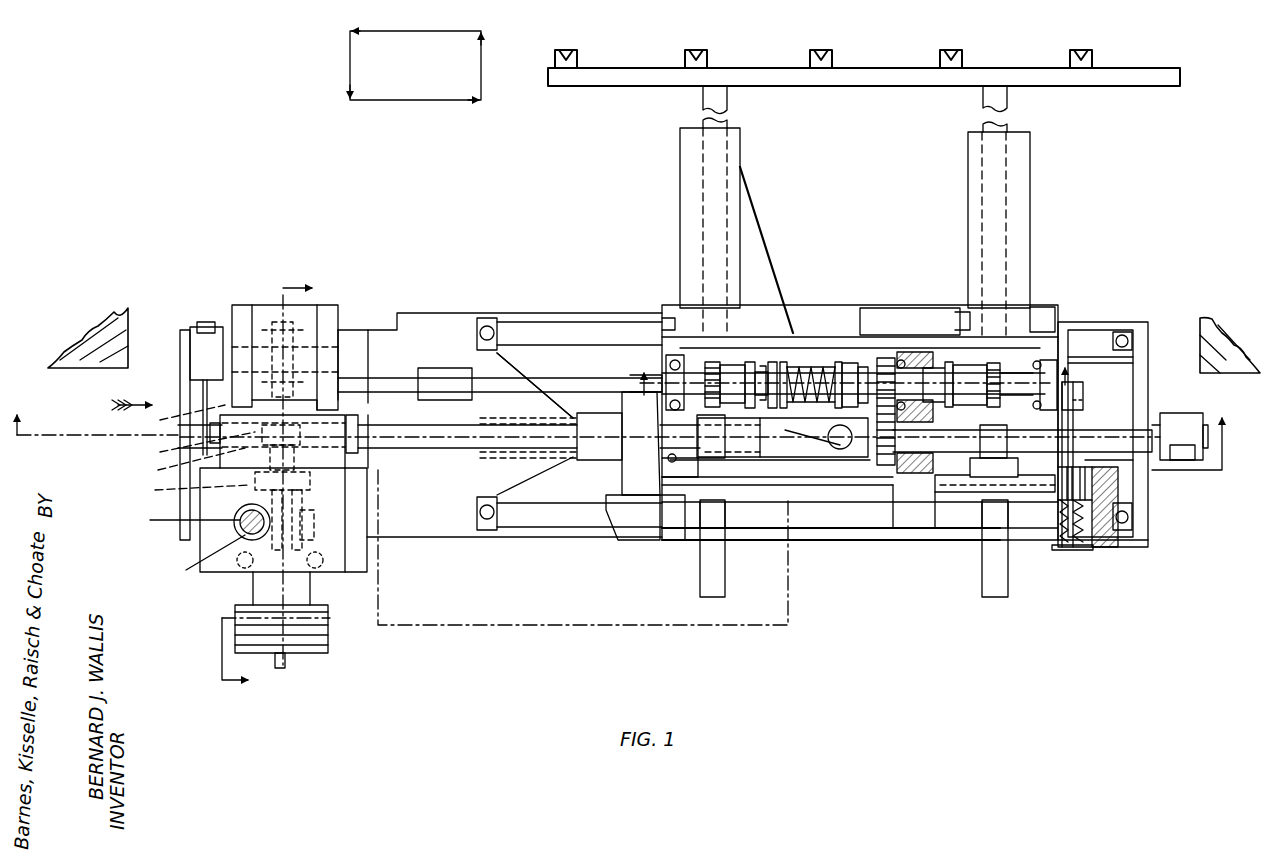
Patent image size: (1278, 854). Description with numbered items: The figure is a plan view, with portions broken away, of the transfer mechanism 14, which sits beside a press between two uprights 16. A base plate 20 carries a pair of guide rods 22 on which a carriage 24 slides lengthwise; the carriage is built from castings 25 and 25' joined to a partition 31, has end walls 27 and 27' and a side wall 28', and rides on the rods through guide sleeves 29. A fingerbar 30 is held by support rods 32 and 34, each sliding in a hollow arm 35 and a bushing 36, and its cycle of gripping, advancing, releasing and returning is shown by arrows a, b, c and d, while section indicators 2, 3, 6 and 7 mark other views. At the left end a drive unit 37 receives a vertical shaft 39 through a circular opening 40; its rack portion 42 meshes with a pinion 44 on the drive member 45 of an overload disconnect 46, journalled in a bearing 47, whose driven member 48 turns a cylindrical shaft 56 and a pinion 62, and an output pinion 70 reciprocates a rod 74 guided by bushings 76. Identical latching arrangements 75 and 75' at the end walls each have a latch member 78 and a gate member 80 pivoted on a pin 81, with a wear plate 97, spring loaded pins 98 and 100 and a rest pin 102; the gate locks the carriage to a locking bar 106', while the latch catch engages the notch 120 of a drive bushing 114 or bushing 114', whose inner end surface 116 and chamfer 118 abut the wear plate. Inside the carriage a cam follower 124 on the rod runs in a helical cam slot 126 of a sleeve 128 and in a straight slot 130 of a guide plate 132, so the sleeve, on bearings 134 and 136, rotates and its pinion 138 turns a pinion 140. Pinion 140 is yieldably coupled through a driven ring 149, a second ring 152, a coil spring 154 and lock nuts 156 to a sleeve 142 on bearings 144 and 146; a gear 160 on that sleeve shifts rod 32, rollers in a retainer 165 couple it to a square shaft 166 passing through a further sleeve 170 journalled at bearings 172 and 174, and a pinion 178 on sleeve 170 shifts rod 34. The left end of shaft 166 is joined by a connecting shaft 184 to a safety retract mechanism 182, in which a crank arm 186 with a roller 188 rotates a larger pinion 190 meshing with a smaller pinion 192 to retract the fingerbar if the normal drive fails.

The arrow a is at (483, 70).
The arrow b is at (395, 34).
The arrow c is at (346, 62).
The arrow d is at (430, 84).
The section line 2- 2 is at (615, 428).
The section line 3- 3 is at (854, 372).
The section line 6- 6 is at (275, 487).
The view arrow 7 is at (114, 407).
The transfer mechanism 14 is at (565, 296).
The uprights 16 is at (108, 338).
The base plate 20 is at (430, 313).
The guide rods 22 is at (515, 325).
The carriage 24 is at (1050, 322).
The casting 25 is at (831, 557).
The casting 25' is at (997, 553).
The end wall 27 is at (997, 440).
The end wall 27' is at (648, 539).
The side wall 28' is at (823, 441).
The guide sleeve 29 is at (662, 305).
The fingerbar 30 is at (833, 80).
The partition 31 is at (920, 528).
The fingerbar support rod 32 is at (727, 100).
The fingerbar support rod 34 is at (1008, 100).
The hollow arm 35 is at (968, 166).
The bushing 36 is at (725, 528).
The drive unit 37 is at (369, 508).
The vertical shaft 39 is at (181, 521).
The circular opening 40 is at (240, 528).
The rack portion 42 is at (196, 563).
The pinion 44 is at (320, 495).
The drive member 45 is at (262, 590).
The overload disconnect device 46 is at (335, 657).
The bearing 47 is at (318, 578).
The driven member 48 is at (320, 645).
The cylindrical shaft 56 is at (286, 665).
The pinion 62 is at (186, 493).
The output pinion 70 is at (184, 466).
The rod 74 is at (425, 445).
The latching arrangement 75 is at (1093, 539).
The latching arrangement 75' is at (611, 466).
The bushings 76 is at (380, 410).
The latch member 78 is at (1090, 480).
The gate member 80 is at (1078, 428).
The pin 81 is at (995, 485).
The wear plate 97 is at (1085, 410).
The spring loaded pin 98 is at (1100, 504).
The spring loaded pin 100 is at (1070, 510).
The pin 102 is at (1083, 395).
The locking bar 106' is at (499, 425).
The drive bushing 114 is at (1184, 436).
The bushing 114' is at (603, 425).
The inner end surface 116 is at (1186, 405).
The chamfer 118 is at (1170, 465).
The notch 120 is at (1180, 460).
The cam follower 124 is at (840, 449).
The cam slot 126 is at (780, 430).
The cylindrical sleeve 128 is at (780, 485).
The straight slot 130 is at (742, 452).
The guide plate 132 is at (780, 418).
The bearing 134 is at (672, 500).
The bearing 136 is at (915, 480).
The pinion 138 is at (890, 530).
The pinion 140 is at (885, 358).
The sleeve 142 is at (635, 384).
The bearing 144 is at (668, 360).
The bearing 146 is at (915, 312).
The driven ring 149 is at (855, 356).
The second ring 152 is at (840, 362).
The coil spring 154 is at (800, 365).
The lock nuts 156 is at (775, 362).
The gear 160 is at (712, 362).
The retainer 165 is at (738, 368).
The square shaft 166 is at (553, 353).
The sleeve 170 is at (943, 360).
The bearing 172 is at (930, 410).
The bearing 174 is at (1098, 327).
The pinion 178 is at (1025, 335).
The positive safety retract mechanism 182 is at (234, 300).
The connecting shaft 184 is at (408, 360).
The crank arm 186 is at (200, 357).
The roller 188 is at (205, 322).
The larger pinion 190 is at (280, 300).
The smaller pinion 192 is at (174, 419).